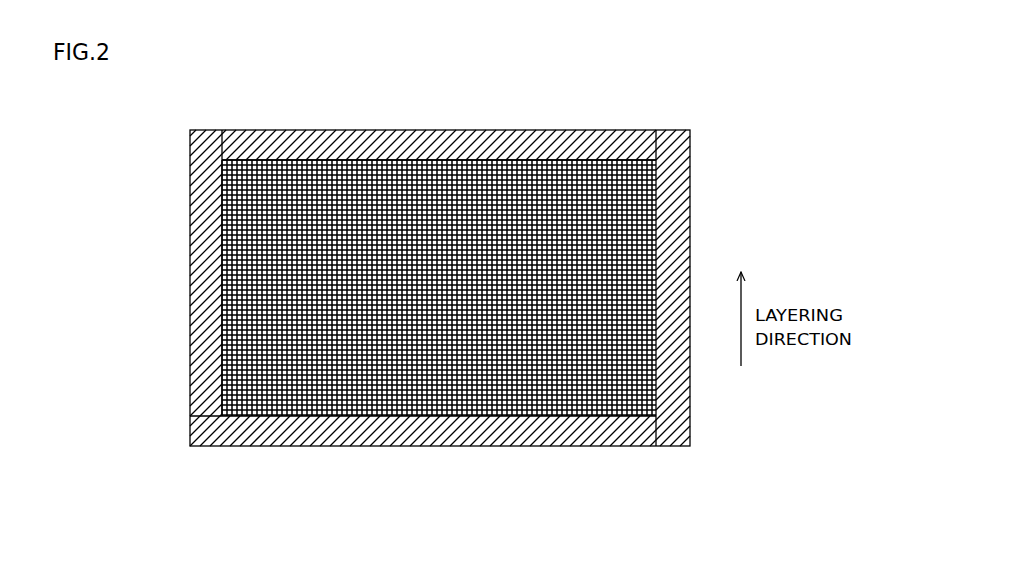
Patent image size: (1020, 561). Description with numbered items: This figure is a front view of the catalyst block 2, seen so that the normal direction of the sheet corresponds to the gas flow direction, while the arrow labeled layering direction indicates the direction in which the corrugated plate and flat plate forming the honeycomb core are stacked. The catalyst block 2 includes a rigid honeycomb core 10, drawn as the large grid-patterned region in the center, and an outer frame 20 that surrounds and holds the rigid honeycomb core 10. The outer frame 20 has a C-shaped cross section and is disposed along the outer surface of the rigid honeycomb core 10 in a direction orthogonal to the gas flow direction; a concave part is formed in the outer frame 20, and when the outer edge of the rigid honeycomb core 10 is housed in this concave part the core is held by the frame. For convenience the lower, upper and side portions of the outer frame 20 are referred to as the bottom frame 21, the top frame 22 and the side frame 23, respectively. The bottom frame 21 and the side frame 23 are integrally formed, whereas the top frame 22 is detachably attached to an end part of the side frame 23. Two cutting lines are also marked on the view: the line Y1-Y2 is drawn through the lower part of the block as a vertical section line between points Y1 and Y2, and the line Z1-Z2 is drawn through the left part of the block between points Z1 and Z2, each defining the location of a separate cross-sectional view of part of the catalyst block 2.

The catalyst block 2 is at (439, 287).
The rigid honeycomb core 10 is at (620, 268).
The outer frame 20 is at (383, 287).
The bottom frame 21 is at (427, 425).
The top frame 22 is at (395, 133).
The side frame 23 is at (190, 185).
The Z1-Z2 cross section line Z1 is at (213, 266).
The Z1-Z2 cross section line Z2 is at (245, 267).
The Y1-Y2 cross section line Y1 is at (512, 372).
The Y1-Y2 cross section line Y2 is at (513, 381).